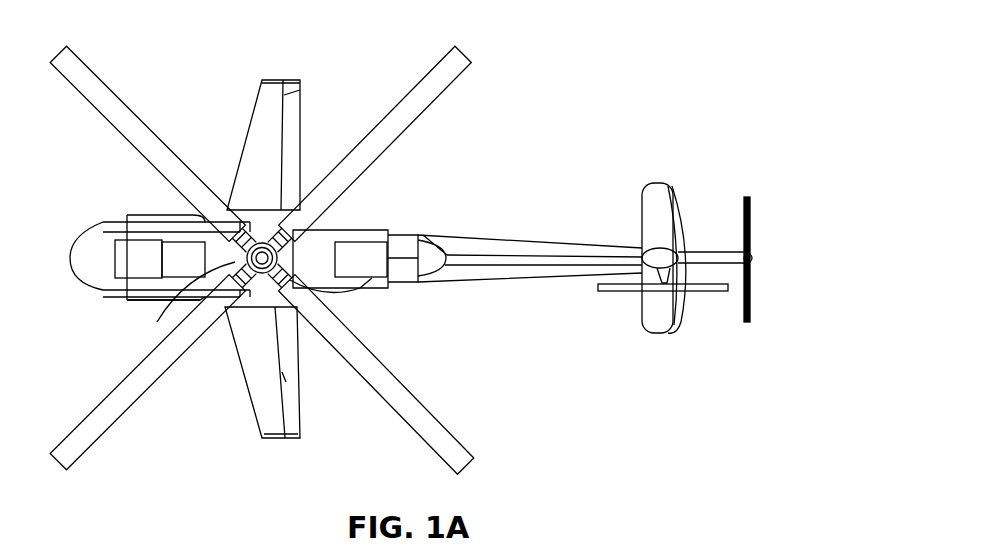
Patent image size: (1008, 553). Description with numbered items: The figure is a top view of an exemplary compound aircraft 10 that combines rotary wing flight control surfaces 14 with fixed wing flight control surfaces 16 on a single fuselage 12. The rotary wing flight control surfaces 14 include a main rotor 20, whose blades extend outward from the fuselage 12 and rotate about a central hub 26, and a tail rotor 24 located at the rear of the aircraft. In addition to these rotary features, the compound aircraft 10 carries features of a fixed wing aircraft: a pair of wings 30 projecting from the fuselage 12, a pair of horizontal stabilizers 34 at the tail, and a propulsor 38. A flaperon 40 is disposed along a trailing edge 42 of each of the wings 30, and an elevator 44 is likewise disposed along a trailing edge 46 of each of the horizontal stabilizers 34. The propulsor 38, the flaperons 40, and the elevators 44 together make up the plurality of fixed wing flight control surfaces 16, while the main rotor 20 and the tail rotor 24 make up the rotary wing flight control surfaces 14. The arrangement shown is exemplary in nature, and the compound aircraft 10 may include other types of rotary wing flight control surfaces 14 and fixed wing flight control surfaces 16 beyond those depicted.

The compound aircraft 10 is at (604, 54).
The fuselage 12 is at (333, 222).
The rotary wing flight control surfaces 14 is at (419, 131).
The fixed wing flight control surfaces 16 is at (276, 447).
The main rotor 20 is at (92, 68).
The tail rotor 24 is at (612, 292).
The hub 26 is at (190, 305).
The wings 30 is at (275, 80).
The horizontal stabilizers 34 is at (655, 190).
The propulsor 38 is at (751, 229).
The flaperon 40 is at (288, 135).
The trailing edge 42 is at (299, 87).
The elevator 44 is at (680, 192).
The trailing edge 46 is at (686, 212).